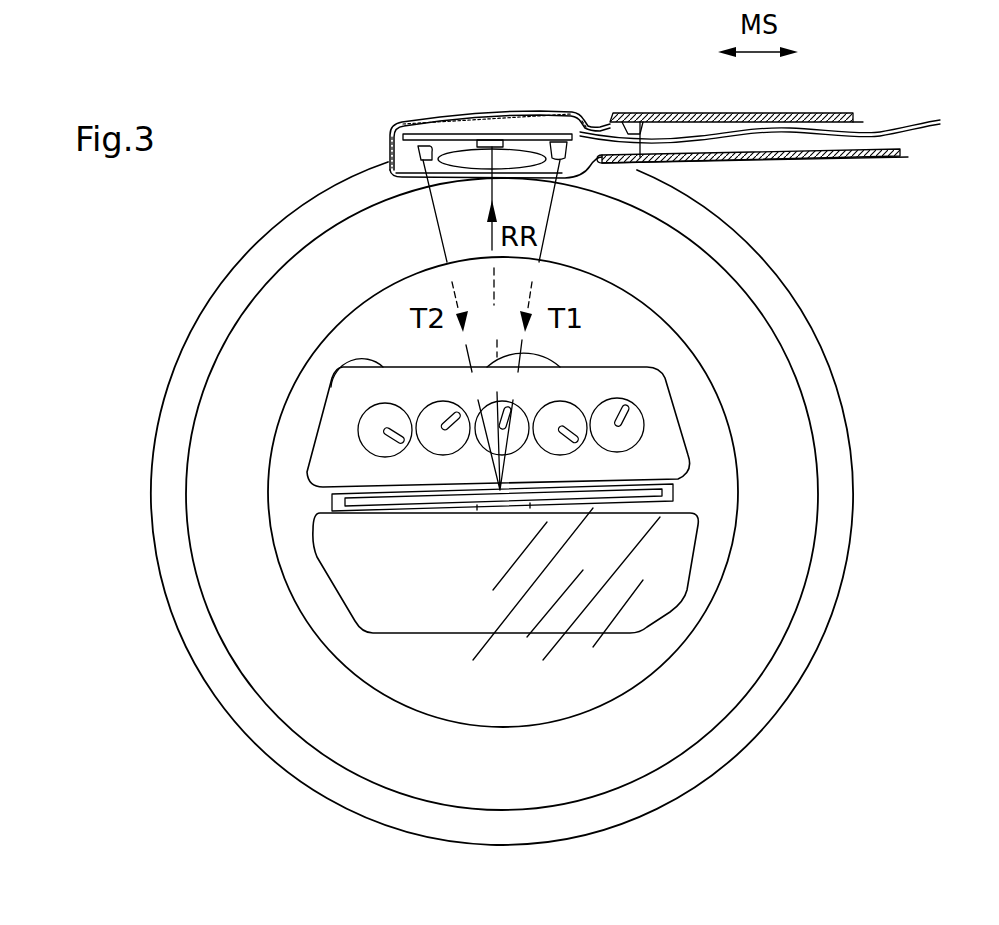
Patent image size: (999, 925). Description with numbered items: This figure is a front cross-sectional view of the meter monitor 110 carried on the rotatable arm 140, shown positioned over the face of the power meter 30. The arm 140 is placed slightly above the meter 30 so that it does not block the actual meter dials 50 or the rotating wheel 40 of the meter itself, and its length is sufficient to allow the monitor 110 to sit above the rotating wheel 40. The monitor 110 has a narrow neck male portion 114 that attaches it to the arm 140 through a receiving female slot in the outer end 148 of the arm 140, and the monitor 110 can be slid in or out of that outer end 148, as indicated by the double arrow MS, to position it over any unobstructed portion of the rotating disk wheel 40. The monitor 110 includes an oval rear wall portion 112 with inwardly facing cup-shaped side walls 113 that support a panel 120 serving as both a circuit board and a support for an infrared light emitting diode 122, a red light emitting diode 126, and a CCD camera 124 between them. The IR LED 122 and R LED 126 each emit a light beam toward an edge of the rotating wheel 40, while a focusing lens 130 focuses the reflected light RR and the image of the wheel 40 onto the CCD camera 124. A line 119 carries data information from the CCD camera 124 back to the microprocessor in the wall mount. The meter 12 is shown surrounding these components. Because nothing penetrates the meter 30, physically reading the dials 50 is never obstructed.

The utility meter 12 is at (393, 171).
The meter 30 is at (212, 393).
The rotating wheel 40 is at (497, 497).
The meter dials 50 is at (612, 402).
The meter monitor 110 is at (440, 141).
The rear wall portion 112 is at (485, 136).
The side walls 113 is at (390, 158).
The narrow neck male portion 114 is at (667, 117).
The line 119 is at (765, 133).
The panel 120 is at (487, 139).
The infrared light emitting diode 122 is at (565, 148).
The CCD camera 124 is at (483, 137).
The red light emitting diode 126 is at (423, 150).
The focusing lens 130 is at (482, 158).
The arm 140 is at (760, 131).
The outer end 148 is at (611, 116).